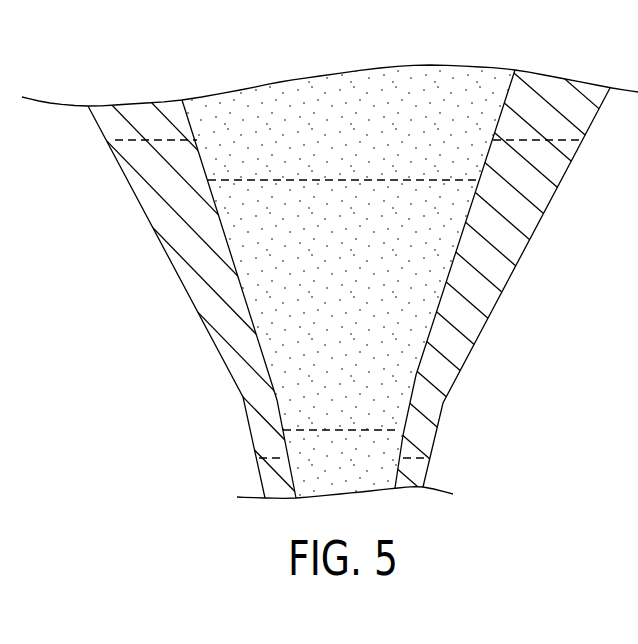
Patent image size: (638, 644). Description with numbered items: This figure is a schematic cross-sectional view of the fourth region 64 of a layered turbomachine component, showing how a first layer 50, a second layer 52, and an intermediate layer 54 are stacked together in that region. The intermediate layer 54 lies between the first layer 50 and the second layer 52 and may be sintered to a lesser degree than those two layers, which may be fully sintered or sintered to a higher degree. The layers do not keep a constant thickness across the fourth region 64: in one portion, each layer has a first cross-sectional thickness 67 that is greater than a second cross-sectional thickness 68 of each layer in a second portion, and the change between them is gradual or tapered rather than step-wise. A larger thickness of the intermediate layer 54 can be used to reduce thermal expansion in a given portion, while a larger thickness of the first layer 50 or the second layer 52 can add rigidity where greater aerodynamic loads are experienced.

The fourth region 64 is at (76, 66).
The first cross-sectional thickness 67 is at (155, 140).
The intermediate layer 54 is at (437, 118).
The second layer 52 is at (213, 308).
The first layer 50 is at (482, 297).
The second cross-sectional thickness 68 is at (282, 458).